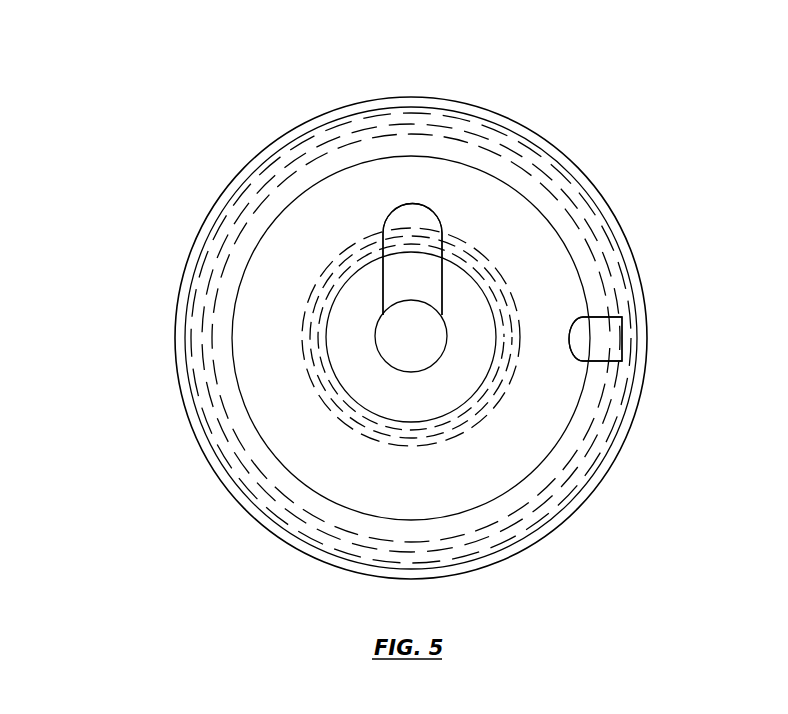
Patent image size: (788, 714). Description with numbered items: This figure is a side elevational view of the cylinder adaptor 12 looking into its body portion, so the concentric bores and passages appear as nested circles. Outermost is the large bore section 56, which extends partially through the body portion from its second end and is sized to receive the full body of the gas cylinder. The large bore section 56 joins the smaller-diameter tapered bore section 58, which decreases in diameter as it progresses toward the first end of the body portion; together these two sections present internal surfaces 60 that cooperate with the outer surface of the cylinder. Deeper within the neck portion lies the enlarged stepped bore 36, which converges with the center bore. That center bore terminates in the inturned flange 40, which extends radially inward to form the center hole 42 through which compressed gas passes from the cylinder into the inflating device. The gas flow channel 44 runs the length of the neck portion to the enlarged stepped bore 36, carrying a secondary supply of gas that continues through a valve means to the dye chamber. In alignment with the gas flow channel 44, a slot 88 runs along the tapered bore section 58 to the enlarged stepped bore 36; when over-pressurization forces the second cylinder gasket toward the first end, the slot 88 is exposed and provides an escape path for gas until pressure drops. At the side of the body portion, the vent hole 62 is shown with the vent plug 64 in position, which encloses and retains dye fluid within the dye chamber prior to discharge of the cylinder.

The cylinder adaptor 12 is at (252, 90).
The enlarged stepped bore 36 is at (447, 417).
The inturned flange 40 is at (457, 297).
The center hole 42 is at (449, 332).
The gas flow channel 44 is at (405, 290).
The large bore section 56 is at (228, 340).
The tapered bore section 58 is at (276, 349).
The internal surfaces 60 is at (249, 260).
The vent hole 62 is at (567, 342).
The vent plug 64 is at (618, 333).
The slot 88 is at (413, 213).